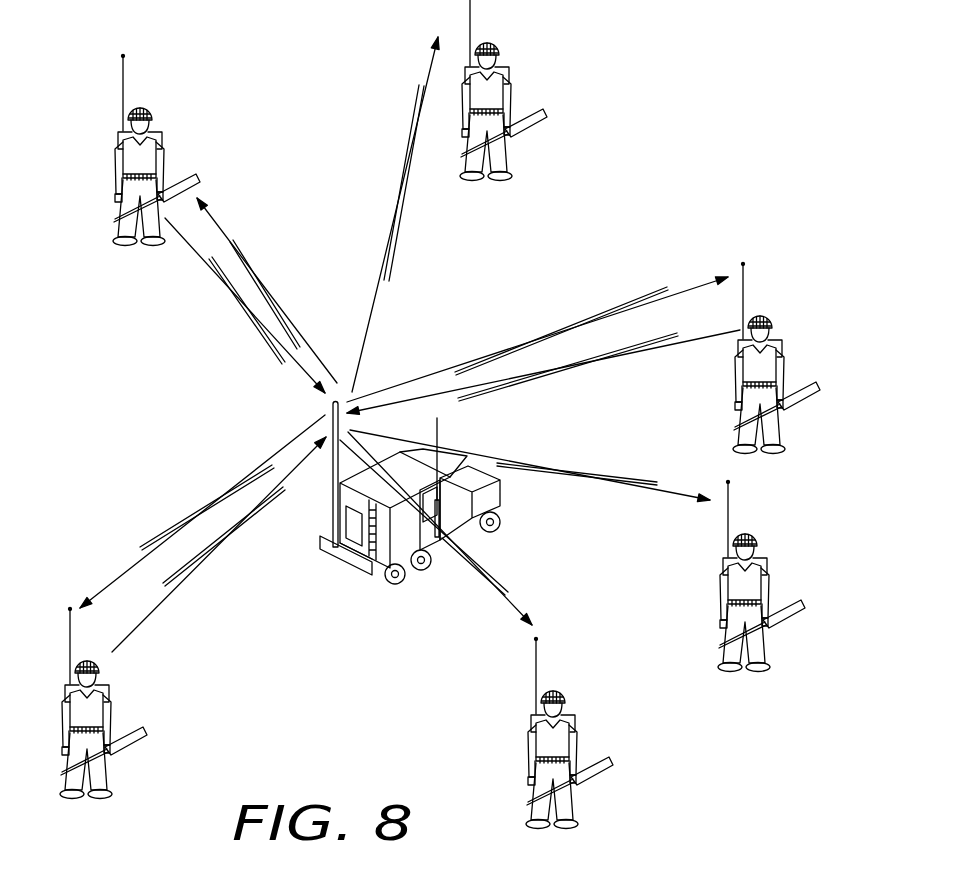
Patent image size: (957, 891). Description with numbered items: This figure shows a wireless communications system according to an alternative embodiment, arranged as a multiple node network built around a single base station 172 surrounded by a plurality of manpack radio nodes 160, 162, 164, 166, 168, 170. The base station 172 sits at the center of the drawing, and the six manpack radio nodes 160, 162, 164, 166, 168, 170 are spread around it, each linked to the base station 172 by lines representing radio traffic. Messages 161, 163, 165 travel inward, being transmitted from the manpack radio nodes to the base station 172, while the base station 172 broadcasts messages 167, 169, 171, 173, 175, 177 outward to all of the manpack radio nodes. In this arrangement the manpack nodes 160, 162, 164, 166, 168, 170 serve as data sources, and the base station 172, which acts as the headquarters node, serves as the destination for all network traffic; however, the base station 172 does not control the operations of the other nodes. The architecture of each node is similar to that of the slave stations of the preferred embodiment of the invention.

The manpack radio node 160 is at (508, 68).
The manpack radio node 162 is at (160, 131).
The manpack radio node 164 is at (108, 687).
The manpack radio node 166 is at (573, 715).
The manpack radio node 168 is at (760, 558).
The manpack radio node 170 is at (740, 379).
The base station 172 is at (492, 528).
The message 161 is at (250, 317).
The message 163 is at (210, 558).
The message 165 is at (573, 370).
The message 167 is at (280, 298).
The message 169 is at (188, 512).
The message 171 is at (538, 333).
The message 173 is at (395, 202).
The message 175 is at (470, 568).
The message 177 is at (558, 475).